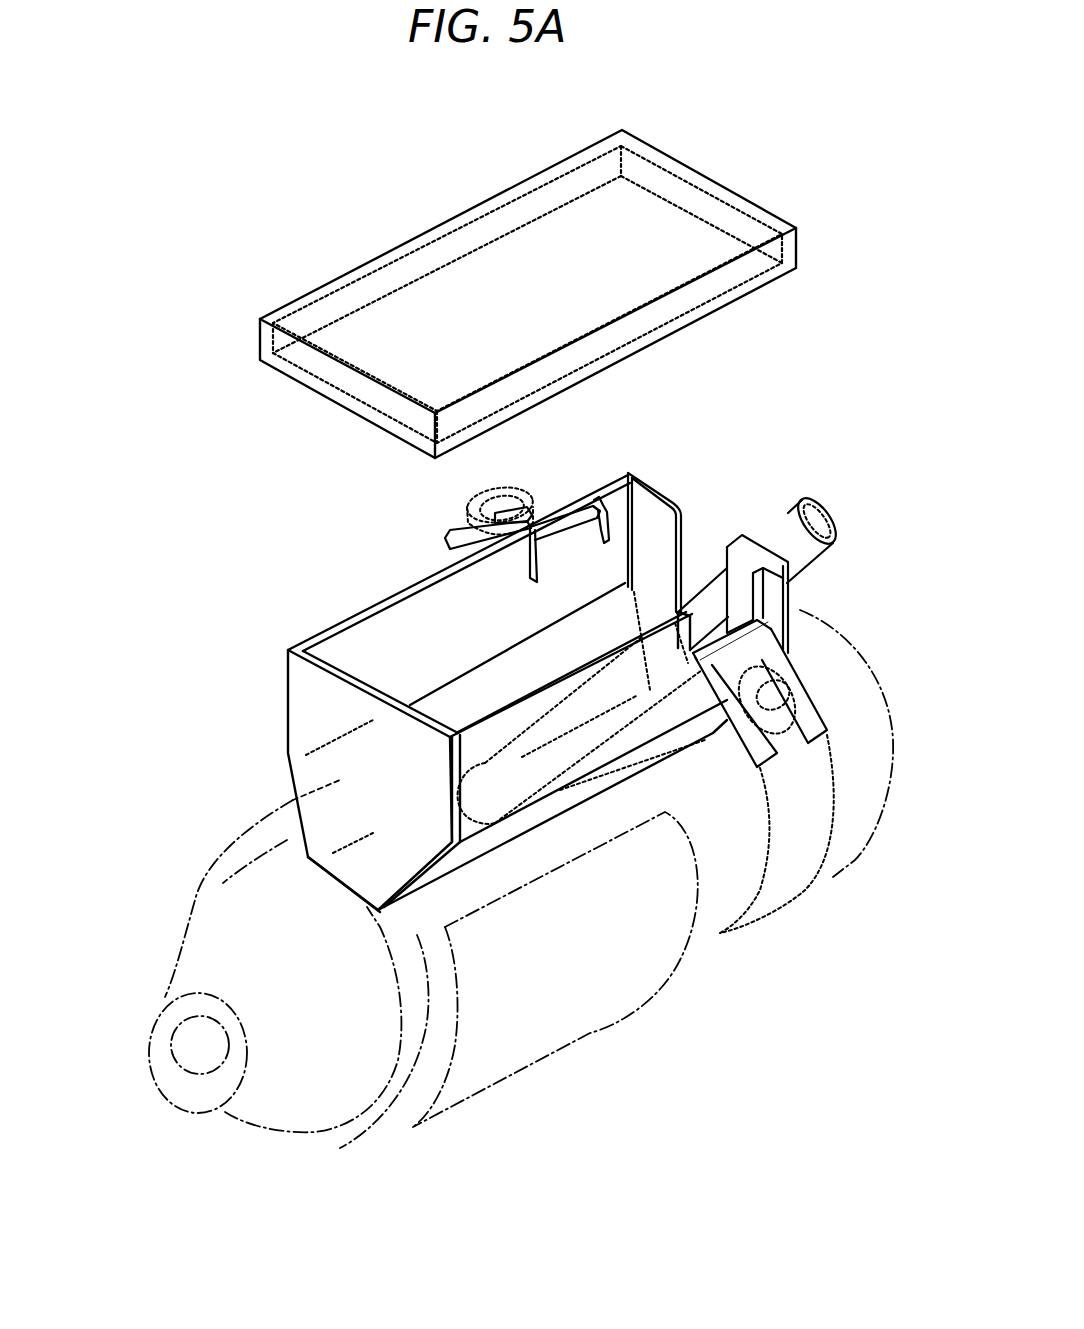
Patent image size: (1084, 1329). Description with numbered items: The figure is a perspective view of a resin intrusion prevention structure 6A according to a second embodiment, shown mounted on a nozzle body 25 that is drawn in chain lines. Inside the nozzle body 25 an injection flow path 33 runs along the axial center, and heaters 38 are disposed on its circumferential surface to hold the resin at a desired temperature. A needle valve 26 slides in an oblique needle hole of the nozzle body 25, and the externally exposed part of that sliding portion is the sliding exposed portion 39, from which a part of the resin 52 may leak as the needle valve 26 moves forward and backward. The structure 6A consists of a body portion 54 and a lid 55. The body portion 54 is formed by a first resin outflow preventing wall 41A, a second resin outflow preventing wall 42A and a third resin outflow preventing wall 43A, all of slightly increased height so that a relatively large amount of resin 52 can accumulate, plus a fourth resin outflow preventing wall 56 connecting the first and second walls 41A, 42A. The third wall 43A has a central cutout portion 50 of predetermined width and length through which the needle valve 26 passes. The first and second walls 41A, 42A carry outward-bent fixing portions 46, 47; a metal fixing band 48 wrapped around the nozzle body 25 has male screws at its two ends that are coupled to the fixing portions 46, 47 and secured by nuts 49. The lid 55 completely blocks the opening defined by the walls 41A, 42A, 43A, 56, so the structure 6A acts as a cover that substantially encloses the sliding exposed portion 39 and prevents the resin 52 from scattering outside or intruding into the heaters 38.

The resin intrusion prevention structure 6A is at (177, 266).
The nozzle body 25 is at (847, 847).
The needle valve 26 is at (800, 497).
The injection flow path 33 is at (205, 1070).
The heater 38 is at (505, 1072).
The sliding exposed portion 39 is at (457, 820).
The first resin outflow preventing wall 41A is at (347, 627).
The second resin outflow preventing wall 42A is at (603, 775).
The third resin outflow preventing wall 43A is at (655, 483).
The fixing portion 46 is at (575, 507).
The fixing portion 47 is at (793, 643).
The fixing band 48 is at (773, 897).
The nut 49 is at (480, 510).
The cutout portion 50 is at (682, 557).
The resin 52 is at (363, 822).
The body portion 54 is at (293, 633).
The lid 55 is at (318, 284).
The fourth resin outflow preventing wall 56 is at (323, 688).